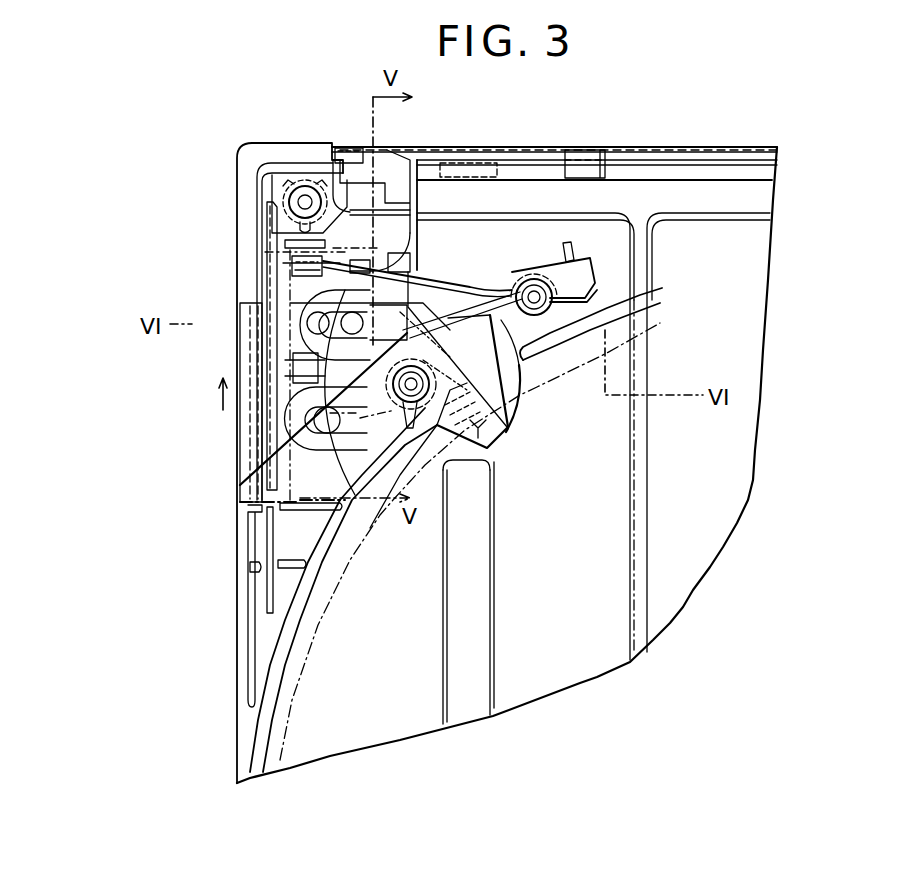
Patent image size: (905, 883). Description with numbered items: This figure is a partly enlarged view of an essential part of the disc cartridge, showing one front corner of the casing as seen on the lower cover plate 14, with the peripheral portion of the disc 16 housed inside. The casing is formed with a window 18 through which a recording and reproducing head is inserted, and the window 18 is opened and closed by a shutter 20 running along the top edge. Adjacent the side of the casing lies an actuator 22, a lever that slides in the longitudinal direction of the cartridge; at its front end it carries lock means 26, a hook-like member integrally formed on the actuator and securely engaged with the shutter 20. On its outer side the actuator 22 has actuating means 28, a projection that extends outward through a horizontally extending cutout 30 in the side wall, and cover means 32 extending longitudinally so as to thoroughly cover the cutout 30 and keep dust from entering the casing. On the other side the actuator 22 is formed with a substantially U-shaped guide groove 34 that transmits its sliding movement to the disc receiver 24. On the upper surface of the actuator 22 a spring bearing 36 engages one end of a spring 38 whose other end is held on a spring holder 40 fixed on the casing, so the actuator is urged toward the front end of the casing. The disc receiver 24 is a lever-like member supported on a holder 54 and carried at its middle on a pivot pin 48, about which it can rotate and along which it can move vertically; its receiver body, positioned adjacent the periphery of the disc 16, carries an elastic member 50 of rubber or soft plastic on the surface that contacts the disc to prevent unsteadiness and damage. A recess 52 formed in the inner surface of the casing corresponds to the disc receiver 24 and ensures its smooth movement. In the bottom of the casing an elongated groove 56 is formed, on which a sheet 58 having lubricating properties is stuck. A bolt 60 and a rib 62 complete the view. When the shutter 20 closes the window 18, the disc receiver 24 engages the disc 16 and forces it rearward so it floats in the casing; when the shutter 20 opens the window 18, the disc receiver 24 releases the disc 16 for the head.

The lower cover plate 14 is at (237, 660).
The disc 16 is at (283, 738).
The window 18 is at (650, 432).
The shutter 20 is at (592, 147).
The actuator 22 is at (363, 160).
The disc receiver 24 is at (512, 435).
The lock means 26 is at (398, 160).
The actuating means 28 is at (246, 345).
The cutout 30 is at (262, 452).
The cover means 32 is at (268, 210).
The guide groove 34 is at (300, 296).
The spring bearing 36 is at (300, 263).
The spring 38 is at (472, 282).
The spring holder 40 is at (535, 283).
The pivot pin 48 is at (435, 327).
The elastic member 50 is at (494, 455).
The recess 52 is at (525, 402).
The holder 54 is at (407, 430).
The elongated groove 56 is at (442, 660).
The sheet 58 is at (442, 575).
The bolt 60 is at (305, 195).
The rib 62 is at (268, 510).